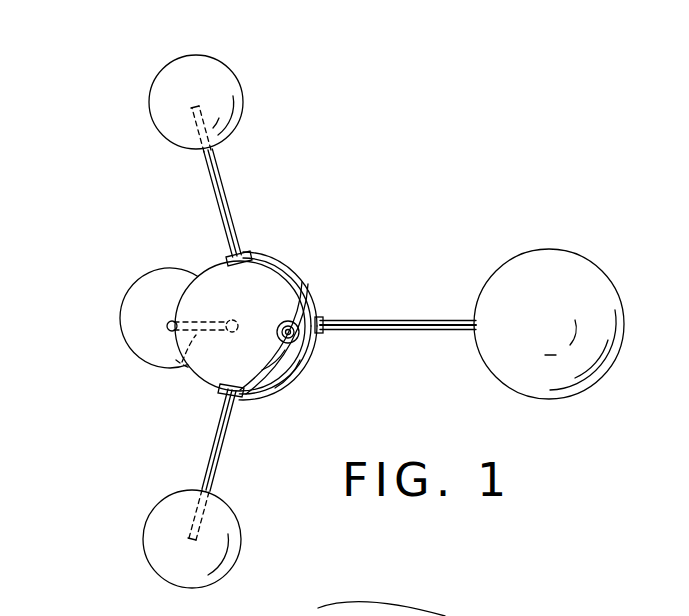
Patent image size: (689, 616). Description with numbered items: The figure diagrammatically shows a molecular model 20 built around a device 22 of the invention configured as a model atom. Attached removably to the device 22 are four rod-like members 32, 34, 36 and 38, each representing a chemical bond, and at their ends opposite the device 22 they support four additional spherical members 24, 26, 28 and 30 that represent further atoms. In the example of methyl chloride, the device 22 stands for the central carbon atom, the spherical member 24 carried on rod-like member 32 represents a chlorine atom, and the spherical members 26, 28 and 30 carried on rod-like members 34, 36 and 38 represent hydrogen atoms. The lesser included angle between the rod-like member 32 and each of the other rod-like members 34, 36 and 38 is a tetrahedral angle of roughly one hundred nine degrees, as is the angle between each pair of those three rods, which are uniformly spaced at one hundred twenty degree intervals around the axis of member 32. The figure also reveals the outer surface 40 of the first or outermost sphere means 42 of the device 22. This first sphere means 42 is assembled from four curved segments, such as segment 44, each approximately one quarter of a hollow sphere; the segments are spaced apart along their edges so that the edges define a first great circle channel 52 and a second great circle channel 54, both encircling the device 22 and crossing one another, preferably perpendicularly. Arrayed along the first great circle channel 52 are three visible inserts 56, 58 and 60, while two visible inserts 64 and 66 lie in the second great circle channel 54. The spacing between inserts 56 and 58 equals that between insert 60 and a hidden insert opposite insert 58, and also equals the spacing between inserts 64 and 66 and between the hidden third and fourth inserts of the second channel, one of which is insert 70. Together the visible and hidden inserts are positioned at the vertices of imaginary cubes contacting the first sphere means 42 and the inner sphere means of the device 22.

The molecular model 20 is at (355, 270).
The device 22 is at (245, 293).
The spherical member 24 is at (495, 287).
The spherical member 26 is at (205, 68).
The spherical member 28 is at (165, 518).
The spherical member 30 is at (125, 326).
The rod-like member 32 is at (400, 320).
The rod-like member 34 is at (232, 186).
The rod-like member 36 is at (222, 443).
The rod-like member 38 is at (165, 362).
The outer surface 40 is at (238, 354).
The first sphere means 42 is at (212, 288).
The curved segment 44 is at (362, 615).
The first great circle channel 52 is at (297, 272).
The second great circle channel 54 is at (285, 380).
The insert 56 is at (147, 279).
The insert 58 is at (247, 256).
The insert 60 is at (320, 318).
The insert 64 is at (225, 391).
The insert 66 is at (300, 340).
The insert 70 is at (243, 332).